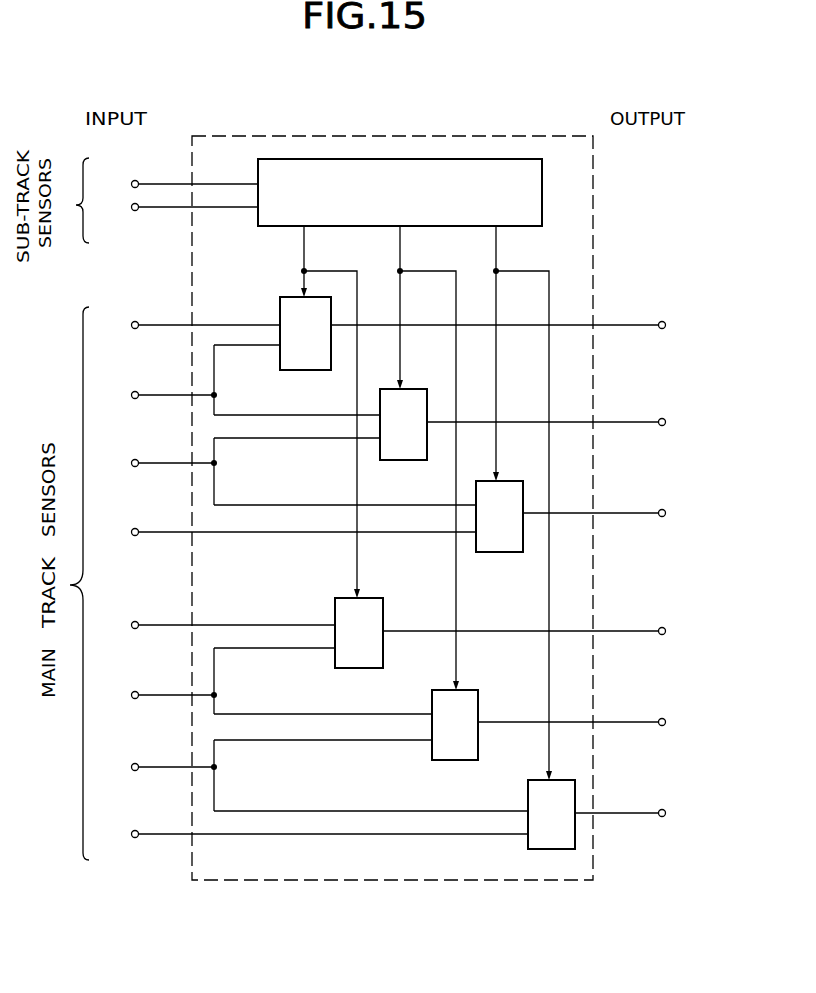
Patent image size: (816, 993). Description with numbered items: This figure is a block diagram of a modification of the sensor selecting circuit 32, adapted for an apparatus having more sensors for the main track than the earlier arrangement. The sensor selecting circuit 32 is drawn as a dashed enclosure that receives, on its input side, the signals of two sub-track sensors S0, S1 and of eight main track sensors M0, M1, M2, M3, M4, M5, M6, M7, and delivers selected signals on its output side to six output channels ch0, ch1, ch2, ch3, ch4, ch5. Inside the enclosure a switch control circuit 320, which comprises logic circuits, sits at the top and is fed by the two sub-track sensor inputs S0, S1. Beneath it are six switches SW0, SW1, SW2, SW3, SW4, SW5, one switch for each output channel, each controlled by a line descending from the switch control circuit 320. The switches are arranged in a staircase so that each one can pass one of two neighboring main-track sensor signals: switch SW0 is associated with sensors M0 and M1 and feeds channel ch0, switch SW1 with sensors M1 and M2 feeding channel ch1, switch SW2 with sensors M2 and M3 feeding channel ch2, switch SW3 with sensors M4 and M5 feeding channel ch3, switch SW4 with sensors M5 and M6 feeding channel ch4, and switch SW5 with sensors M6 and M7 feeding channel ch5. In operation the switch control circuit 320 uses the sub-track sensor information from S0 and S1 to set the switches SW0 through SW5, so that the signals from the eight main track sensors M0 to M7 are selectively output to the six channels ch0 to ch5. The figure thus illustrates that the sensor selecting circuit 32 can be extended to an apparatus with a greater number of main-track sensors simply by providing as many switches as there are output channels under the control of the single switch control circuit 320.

The sensor selecting circuit 32 is at (219, 136).
The switch control circuit 320 is at (530, 159).
The switch SW0 is at (305, 333).
The switch SW1 is at (403, 424).
The switch SW2 is at (499, 516).
The switch SW3 is at (359, 633).
The switch SW4 is at (455, 725).
The switch SW5 is at (551, 814).
The sub-track sensor S0 is at (175, 185).
The sub-track sensor S1 is at (175, 210).
The main track sensor M0 is at (186, 326).
The main track sensor M1 is at (236, 380).
The main track sensor M2 is at (284, 471).
The main track sensor M3 is at (284, 533).
The main track sensor M4 is at (214, 626).
The main track sensor M5 is at (262, 681).
The main track sensor M6 is at (310, 775).
The main track sensor M7 is at (310, 835).
The output channel ch0 is at (515, 326).
The output channel ch1 is at (563, 423).
The output channel ch2 is at (611, 514).
The output channel ch3 is at (541, 632).
The output channel ch4 is at (589, 723).
The output channel ch5 is at (637, 814).